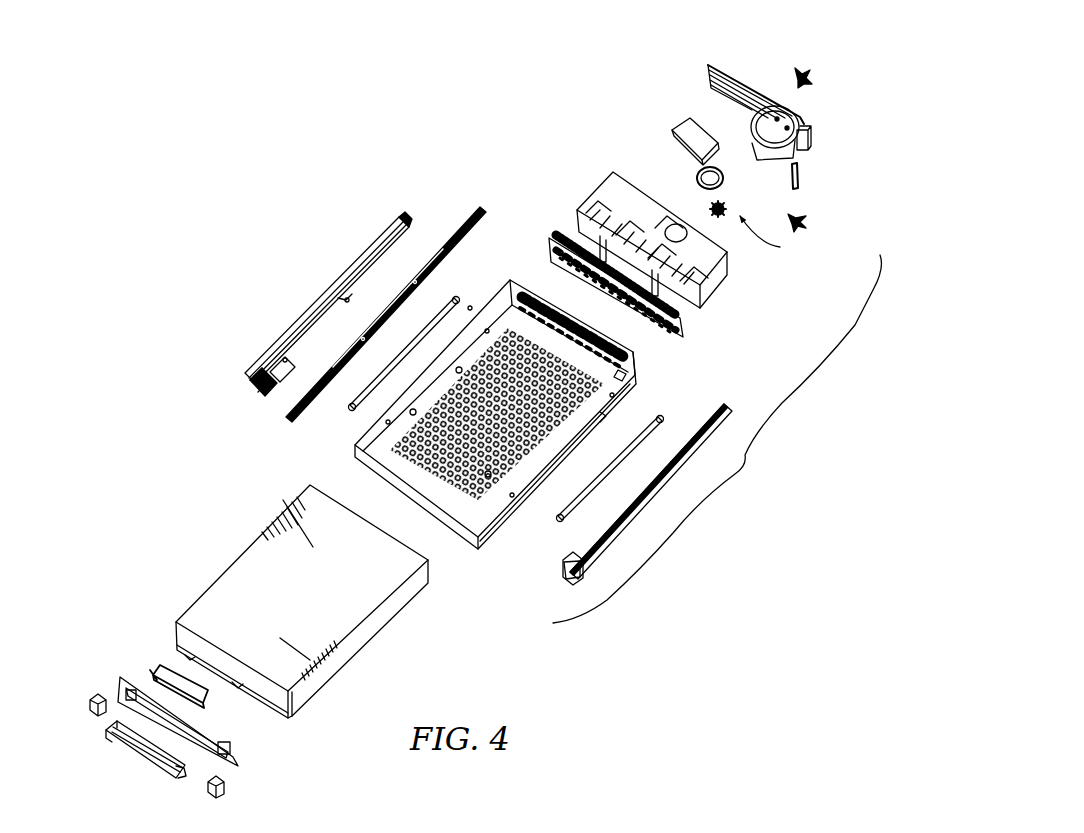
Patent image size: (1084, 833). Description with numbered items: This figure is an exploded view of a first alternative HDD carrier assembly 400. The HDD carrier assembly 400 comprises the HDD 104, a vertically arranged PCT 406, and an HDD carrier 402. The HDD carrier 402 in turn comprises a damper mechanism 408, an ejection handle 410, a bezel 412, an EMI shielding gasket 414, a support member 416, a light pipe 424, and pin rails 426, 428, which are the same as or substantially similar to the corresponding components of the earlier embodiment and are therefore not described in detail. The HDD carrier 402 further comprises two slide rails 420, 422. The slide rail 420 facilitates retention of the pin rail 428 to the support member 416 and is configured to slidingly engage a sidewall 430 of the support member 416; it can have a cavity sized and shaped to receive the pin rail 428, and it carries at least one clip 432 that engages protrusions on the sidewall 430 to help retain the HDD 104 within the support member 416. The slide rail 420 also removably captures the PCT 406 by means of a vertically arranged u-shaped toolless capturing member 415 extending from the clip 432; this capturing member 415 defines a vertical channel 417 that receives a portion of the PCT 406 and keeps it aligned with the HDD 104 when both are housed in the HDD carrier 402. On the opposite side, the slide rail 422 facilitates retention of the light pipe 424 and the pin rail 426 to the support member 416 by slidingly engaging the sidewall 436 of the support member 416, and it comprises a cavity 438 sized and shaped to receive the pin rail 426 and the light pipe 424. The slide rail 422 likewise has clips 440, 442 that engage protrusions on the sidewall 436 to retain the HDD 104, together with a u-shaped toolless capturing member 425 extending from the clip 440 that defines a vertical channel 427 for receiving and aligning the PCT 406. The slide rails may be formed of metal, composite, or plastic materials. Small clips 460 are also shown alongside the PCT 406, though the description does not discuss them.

The HDD carrier assembly 400 is at (440, 150).
The HDD carrier 402 is at (717, 439).
The HDD 104 is at (355, 650).
The PCT 406 is at (145, 663).
The damper mechanism 408 is at (805, 70).
The ejection handle 410 is at (713, 57).
The bezel 412 is at (595, 185).
The EMI shielding gasket 414 is at (695, 330).
The capturing member 415 is at (555, 547).
The support member 416 is at (560, 548).
The vertical channel 417 is at (572, 545).
The slide rail 420 is at (740, 410).
The slide rail 422 is at (370, 242).
The light pipe 424 is at (475, 215).
The capturing member 425 is at (262, 400).
The pin rail 426 is at (475, 290).
The vertical channel 427 is at (280, 378).
The pin rail 428 is at (672, 417).
The sidewall 430 is at (600, 420).
The clip 432 is at (562, 572).
The sidewall 436 is at (363, 418).
The cavity 438 is at (352, 292).
The clip 440 is at (252, 393).
The clip 442 is at (410, 222).
The clip 460 is at (90, 706).